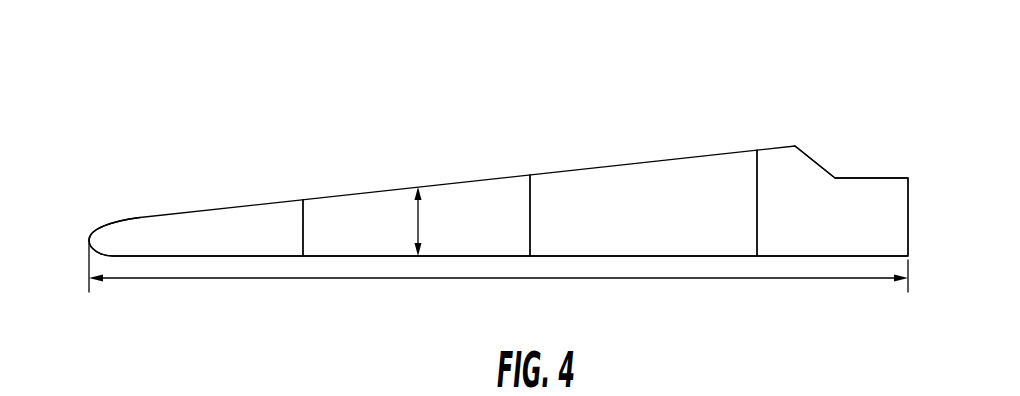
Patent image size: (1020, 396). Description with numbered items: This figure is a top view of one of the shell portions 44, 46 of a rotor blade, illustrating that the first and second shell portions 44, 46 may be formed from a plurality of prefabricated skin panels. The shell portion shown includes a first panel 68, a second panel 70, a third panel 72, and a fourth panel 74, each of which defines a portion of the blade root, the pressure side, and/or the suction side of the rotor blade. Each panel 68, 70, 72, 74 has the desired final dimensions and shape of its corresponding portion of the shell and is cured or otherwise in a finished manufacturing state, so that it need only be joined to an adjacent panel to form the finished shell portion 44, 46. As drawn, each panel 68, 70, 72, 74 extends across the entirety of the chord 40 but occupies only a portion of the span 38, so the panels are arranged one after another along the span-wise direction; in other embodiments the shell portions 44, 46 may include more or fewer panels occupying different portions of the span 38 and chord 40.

The first shell portion 44 is at (475, 134).
The second shell portion 46 is at (498, 201).
The fourth panel 74 is at (140, 240).
The third panel 72 is at (490, 203).
The second panel 70 is at (652, 180).
The first panel 68 is at (800, 183).
The chord 40 is at (415, 228).
The span 38 is at (377, 280).